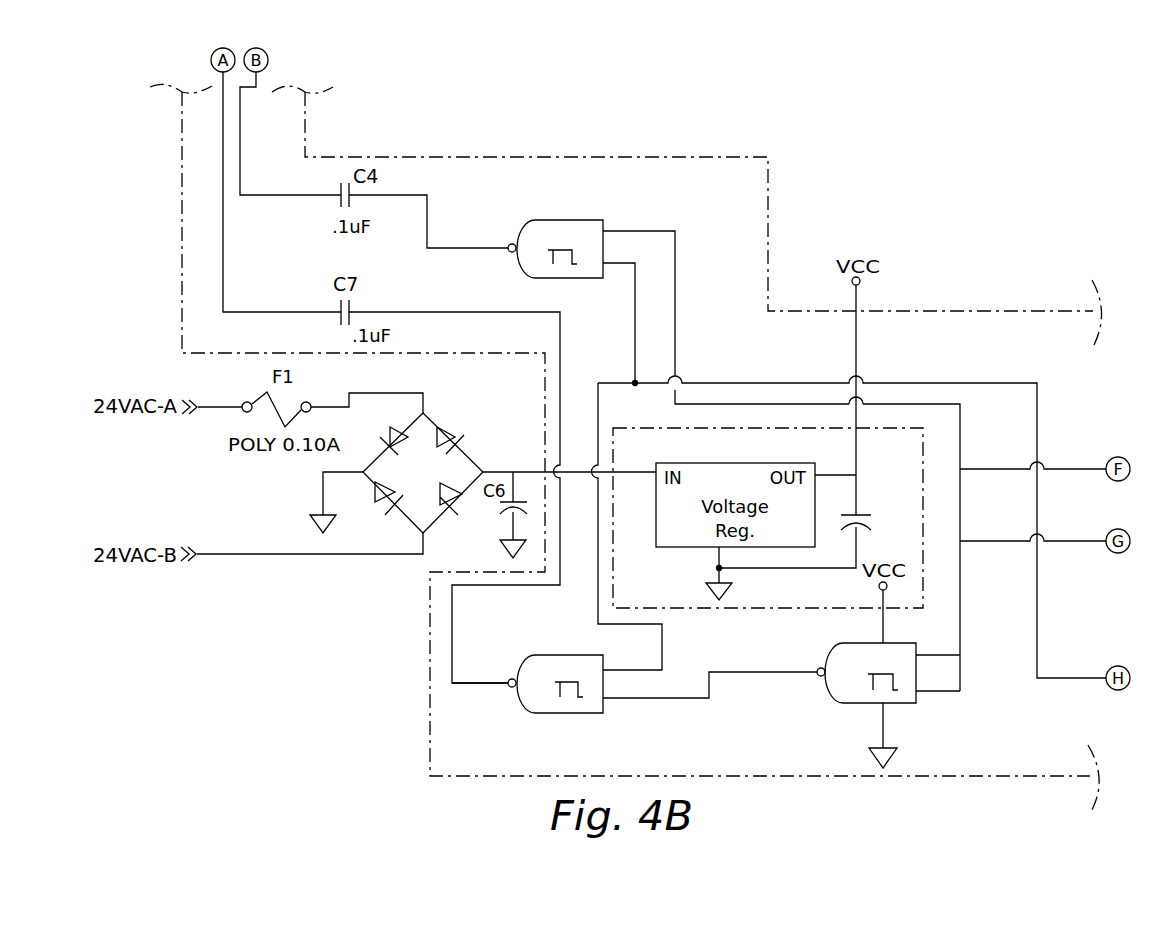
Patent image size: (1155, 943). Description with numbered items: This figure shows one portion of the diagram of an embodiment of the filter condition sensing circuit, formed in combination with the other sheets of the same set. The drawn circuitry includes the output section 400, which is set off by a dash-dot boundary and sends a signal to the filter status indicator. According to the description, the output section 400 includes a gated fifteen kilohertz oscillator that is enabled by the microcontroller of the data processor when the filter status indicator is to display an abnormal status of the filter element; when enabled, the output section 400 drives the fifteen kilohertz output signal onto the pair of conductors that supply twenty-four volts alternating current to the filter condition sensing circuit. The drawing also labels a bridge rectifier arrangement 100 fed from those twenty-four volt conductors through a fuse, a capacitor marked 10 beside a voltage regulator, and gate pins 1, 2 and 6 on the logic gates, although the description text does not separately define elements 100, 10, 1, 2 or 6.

The output section 400 is at (626, 447).
The bridge rectifier 100 is at (396, 485).
The capacitor C8 10 is at (869, 514).
The gate output pin 1 is at (726, 307).
The gate output pin 2 is at (620, 319).
The gate input pin 6 is at (480, 672).